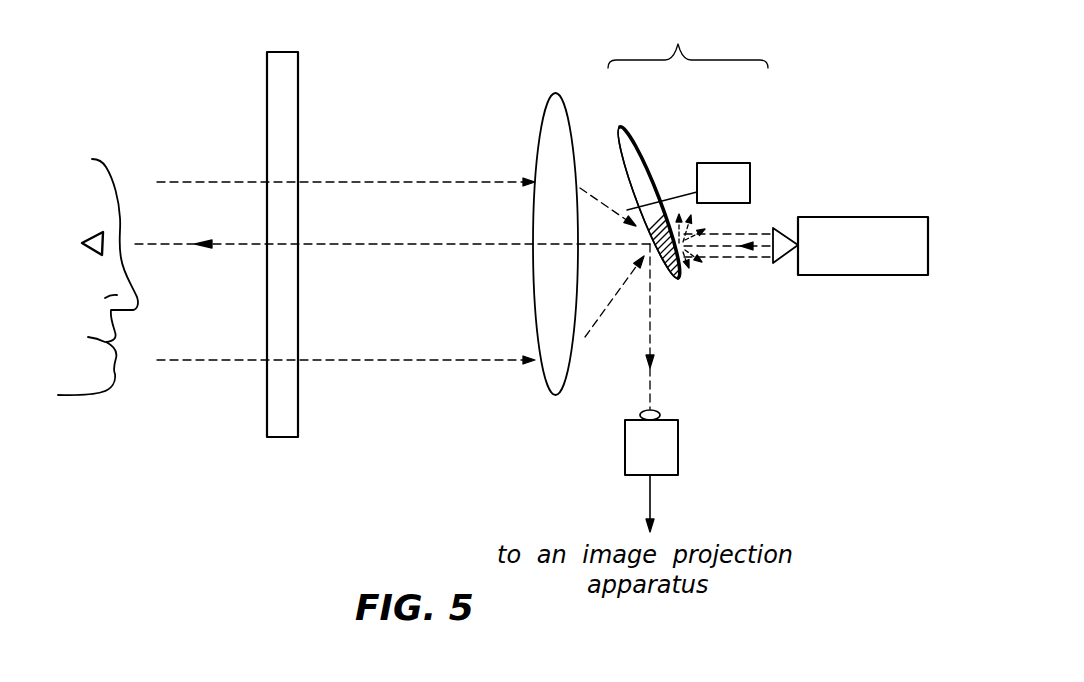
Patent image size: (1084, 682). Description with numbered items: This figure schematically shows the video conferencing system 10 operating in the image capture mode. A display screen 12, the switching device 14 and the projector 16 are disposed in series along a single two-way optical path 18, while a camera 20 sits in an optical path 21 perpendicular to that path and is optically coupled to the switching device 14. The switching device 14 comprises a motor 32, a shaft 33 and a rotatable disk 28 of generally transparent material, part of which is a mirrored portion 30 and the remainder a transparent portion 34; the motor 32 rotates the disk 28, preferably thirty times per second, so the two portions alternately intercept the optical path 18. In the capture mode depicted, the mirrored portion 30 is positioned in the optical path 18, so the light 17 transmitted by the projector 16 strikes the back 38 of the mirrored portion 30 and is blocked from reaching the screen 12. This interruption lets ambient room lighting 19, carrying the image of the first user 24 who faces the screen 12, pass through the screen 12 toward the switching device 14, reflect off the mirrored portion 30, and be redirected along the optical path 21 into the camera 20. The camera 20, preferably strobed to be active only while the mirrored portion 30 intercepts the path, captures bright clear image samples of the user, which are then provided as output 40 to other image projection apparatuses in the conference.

The video conferencing system 10 is at (810, 400).
The display screen 12 is at (298, 138).
The switching device 14 is at (696, 155).
The projector 16 is at (873, 217).
The light 17 is at (748, 249).
The two-way optical path 18 is at (360, 246).
The ambient room lighting 19 is at (204, 248).
The camera 20 is at (680, 440).
The optical path 21 is at (653, 390).
The first user 24 is at (107, 168).
The rotatable disk 28 is at (637, 138).
The mirrored portion 30 is at (645, 238).
The motor 32 is at (750, 178).
The shaft 33 is at (667, 192).
The transparent portion 34 is at (617, 153).
The back of the mirrored portion 38 is at (697, 258).
The output 40 is at (650, 499).